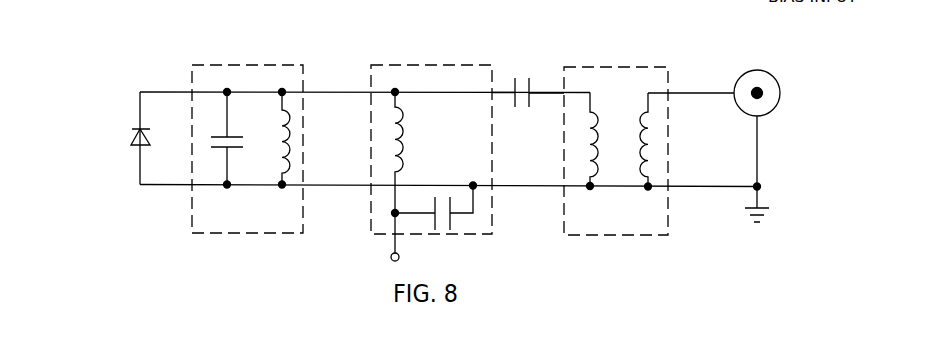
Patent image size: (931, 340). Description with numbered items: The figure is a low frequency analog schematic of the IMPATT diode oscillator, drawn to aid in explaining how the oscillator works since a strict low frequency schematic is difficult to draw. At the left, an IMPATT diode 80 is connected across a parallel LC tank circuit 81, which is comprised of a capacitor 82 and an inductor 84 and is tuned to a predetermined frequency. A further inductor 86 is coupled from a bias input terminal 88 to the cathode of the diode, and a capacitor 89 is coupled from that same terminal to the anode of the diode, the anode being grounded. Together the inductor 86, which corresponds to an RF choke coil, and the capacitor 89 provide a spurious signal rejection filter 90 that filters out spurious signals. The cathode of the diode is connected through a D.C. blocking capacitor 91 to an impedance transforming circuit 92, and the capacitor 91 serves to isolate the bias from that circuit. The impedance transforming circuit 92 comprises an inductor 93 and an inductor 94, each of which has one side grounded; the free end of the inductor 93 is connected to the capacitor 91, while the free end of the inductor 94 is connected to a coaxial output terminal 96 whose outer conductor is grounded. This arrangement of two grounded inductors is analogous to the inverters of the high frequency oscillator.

The IMPATT diode 80 is at (128, 143).
The parallel LC tank circuit 81 is at (186, 66).
The capacitor 82 is at (239, 141).
The inductor 84 is at (304, 131).
The inductor 86 is at (407, 131).
The bias input terminal 88 is at (389, 257).
The capacitor 89 is at (455, 221).
The spurious signal rejection filter 90 is at (366, 58).
The D.C. blocking capacitor 91 is at (517, 79).
The impedance transforming circuit 92 is at (601, 61).
The inductor 93 is at (602, 122).
The inductor 94 is at (650, 137).
The coaxial output terminal 96 is at (762, 91).